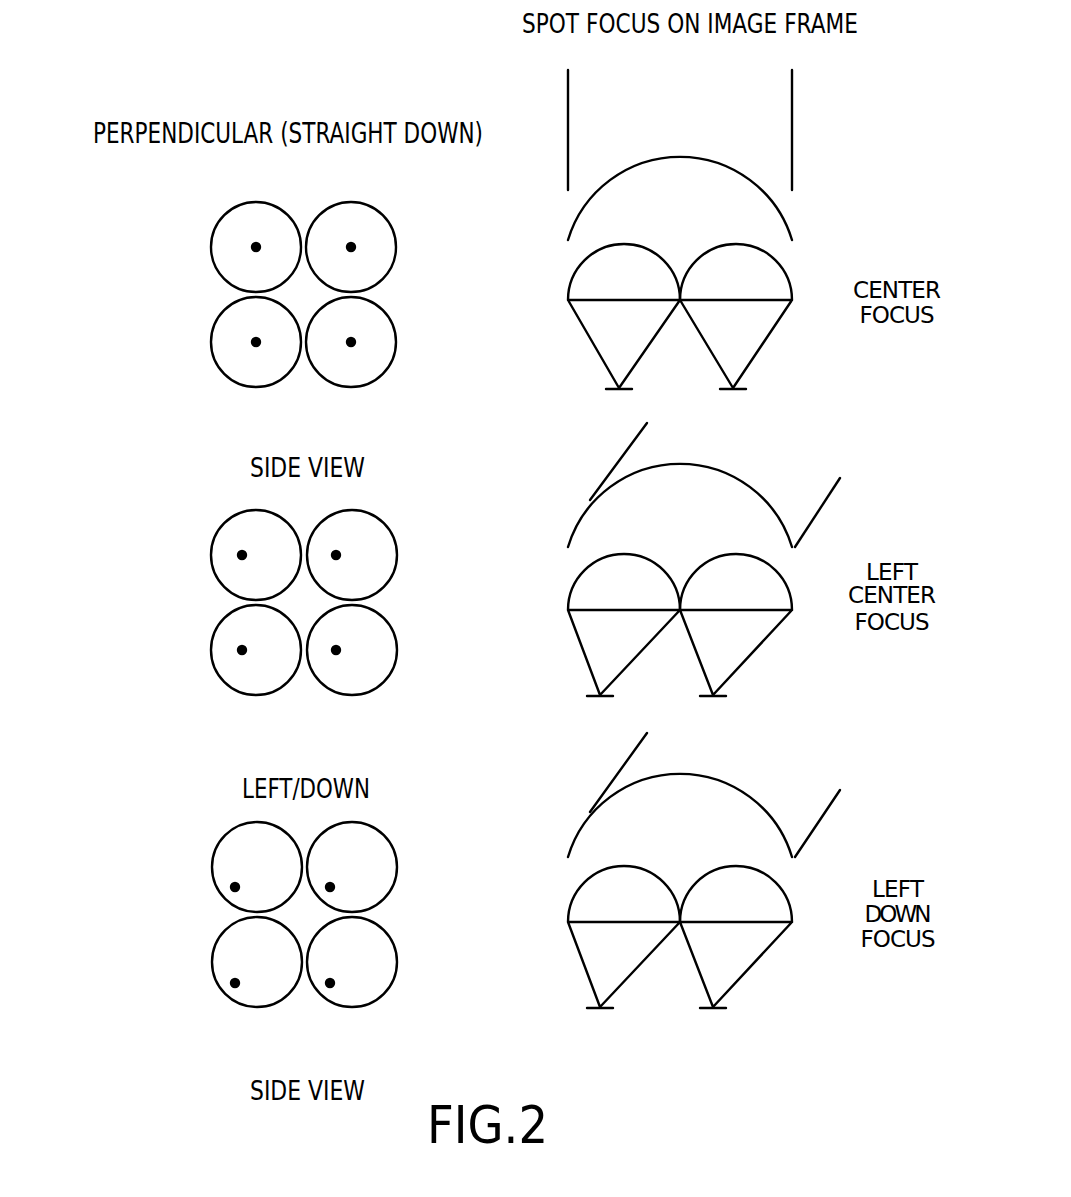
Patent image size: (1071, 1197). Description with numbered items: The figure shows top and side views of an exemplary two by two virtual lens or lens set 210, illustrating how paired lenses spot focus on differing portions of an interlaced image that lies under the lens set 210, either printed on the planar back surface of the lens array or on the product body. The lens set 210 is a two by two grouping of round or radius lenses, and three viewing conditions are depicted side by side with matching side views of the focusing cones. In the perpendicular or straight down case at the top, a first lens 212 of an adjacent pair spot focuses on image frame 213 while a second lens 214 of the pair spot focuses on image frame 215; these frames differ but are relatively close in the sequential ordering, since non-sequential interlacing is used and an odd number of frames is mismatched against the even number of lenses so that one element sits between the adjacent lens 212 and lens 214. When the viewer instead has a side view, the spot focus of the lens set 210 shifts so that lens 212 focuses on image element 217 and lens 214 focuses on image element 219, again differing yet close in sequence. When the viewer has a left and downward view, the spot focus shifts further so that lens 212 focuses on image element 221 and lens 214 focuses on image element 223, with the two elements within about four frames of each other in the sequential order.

The virtual lens or lens set 210 is at (103, 253).
The first lens 212 is at (247, 387).
The second lens 214 is at (362, 387).
The image frame 213 is at (256, 342).
The image frame 215 is at (351, 342).
The image element 217 is at (242, 650).
The image element 219 is at (336, 650).
The image element 221 is at (235, 983).
The image element 223 is at (330, 983).